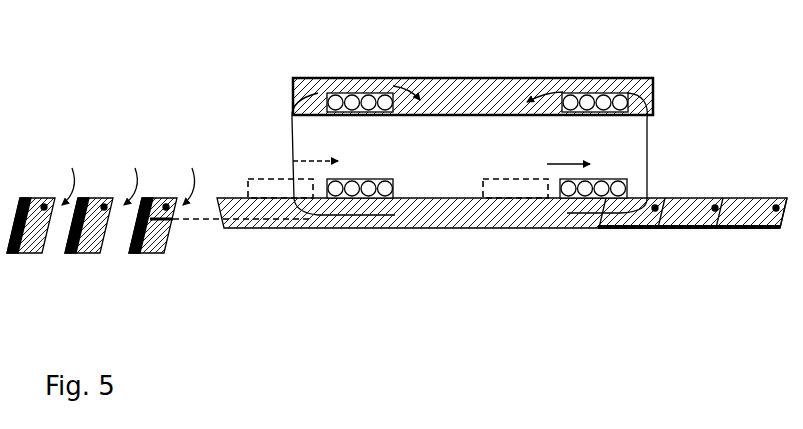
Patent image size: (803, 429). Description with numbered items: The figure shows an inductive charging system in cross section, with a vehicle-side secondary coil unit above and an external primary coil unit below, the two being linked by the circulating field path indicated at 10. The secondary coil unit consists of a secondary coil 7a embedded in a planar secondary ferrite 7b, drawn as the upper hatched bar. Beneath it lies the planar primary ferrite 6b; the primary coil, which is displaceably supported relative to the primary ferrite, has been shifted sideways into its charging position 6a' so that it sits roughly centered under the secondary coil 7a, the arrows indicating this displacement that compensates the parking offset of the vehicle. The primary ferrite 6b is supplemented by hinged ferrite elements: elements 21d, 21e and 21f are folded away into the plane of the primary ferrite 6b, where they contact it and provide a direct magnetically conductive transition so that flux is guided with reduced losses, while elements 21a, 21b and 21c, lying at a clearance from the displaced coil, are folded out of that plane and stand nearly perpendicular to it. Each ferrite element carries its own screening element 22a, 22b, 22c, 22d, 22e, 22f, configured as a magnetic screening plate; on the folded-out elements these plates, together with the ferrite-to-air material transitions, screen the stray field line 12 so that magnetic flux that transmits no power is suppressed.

The secondary coil 7a is at (361, 78).
The secondary ferrite 7b is at (474, 78).
The linear guide device 10 is at (292, 118).
The charging position of the primary coil 6a' is at (437, 167).
The primary ferrite 6b is at (427, 205).
The screened stray field line 12 is at (192, 222).
The ferrite element 21a is at (33, 255).
The ferrite element 21b is at (88, 255).
The ferrite element 21c is at (147, 255).
The ferrite element 21d is at (648, 206).
The ferrite element 21e is at (700, 210).
The ferrite element 21f is at (755, 210).
The screening element 22a is at (25, 198).
The screening element 22b is at (85, 198).
The screening element 22c is at (148, 198).
The screening element 22d is at (630, 232).
The screening element 22e is at (690, 232).
The screening element 22f is at (748, 232).